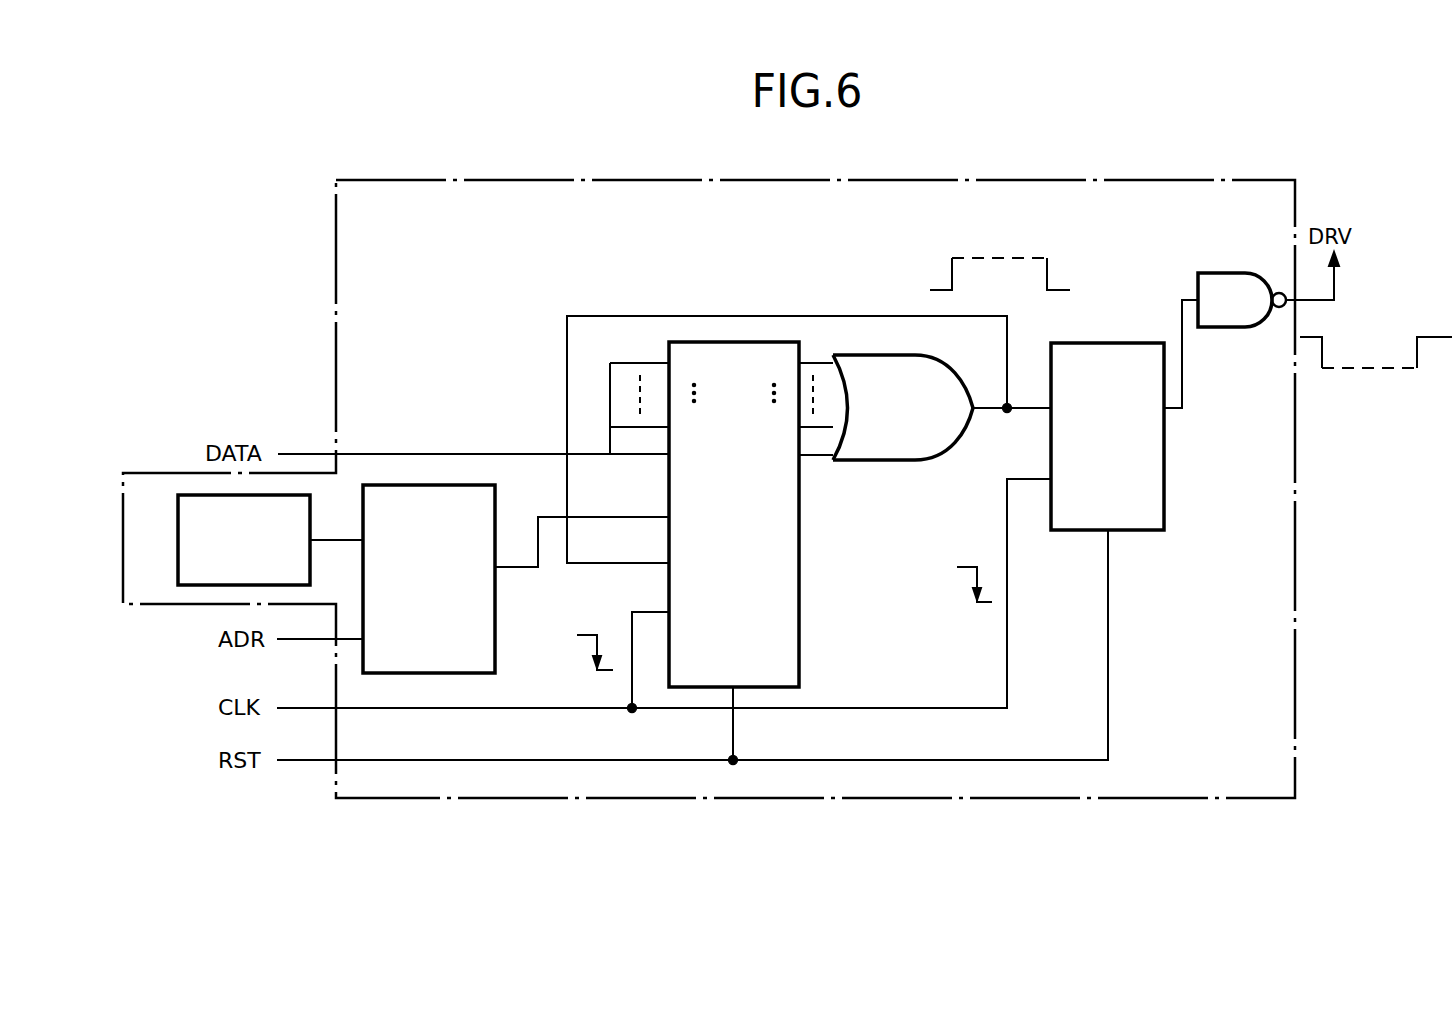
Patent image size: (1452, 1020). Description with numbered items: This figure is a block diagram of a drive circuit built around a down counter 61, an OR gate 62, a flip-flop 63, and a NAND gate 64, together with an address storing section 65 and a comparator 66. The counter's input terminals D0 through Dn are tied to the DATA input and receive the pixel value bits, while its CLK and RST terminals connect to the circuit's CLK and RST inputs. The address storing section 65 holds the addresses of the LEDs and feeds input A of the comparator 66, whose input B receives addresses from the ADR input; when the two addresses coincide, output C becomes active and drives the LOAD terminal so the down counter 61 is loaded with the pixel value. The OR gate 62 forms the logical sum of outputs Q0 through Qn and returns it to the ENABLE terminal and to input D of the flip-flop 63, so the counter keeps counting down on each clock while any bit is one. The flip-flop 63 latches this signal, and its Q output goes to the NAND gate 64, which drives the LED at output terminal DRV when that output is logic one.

The down counter 61 is at (801, 612).
The OR gate 62 is at (963, 383).
The flip-flop 63 is at (1130, 343).
The NAND gate 64 is at (1233, 273).
The address storing section 65 is at (178, 518).
The comparator 66 is at (497, 496).